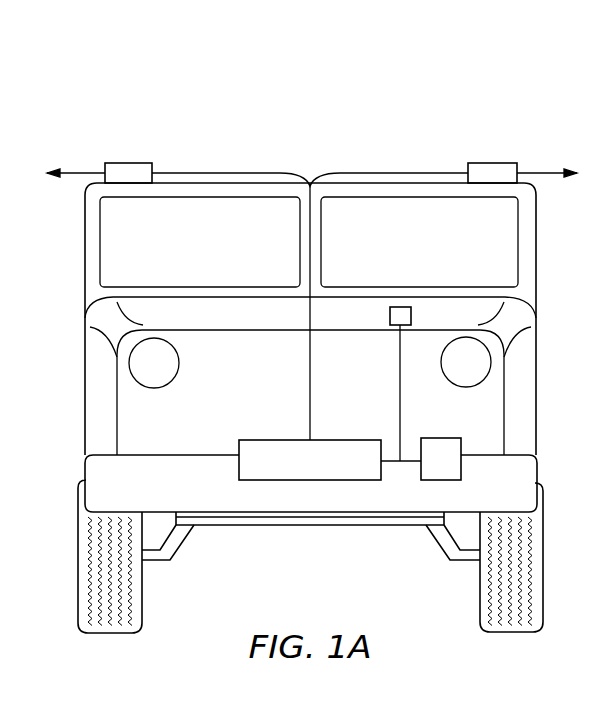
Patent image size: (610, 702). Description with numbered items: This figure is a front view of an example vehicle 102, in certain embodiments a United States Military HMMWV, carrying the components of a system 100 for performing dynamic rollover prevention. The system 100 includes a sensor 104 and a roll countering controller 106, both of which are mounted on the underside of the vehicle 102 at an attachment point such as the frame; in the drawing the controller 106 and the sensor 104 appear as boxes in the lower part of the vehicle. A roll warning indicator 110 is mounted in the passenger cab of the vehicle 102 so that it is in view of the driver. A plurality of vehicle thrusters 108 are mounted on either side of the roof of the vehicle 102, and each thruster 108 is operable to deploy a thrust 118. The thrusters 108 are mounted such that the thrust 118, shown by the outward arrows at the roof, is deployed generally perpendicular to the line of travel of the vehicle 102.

The system for performing dynamic rollover prevention 100 is at (250, 83).
The vehicle 102 is at (537, 296).
The sensor 104 is at (461, 468).
The roll countering controller 106 is at (275, 440).
The vehicle thruster 108 is at (127, 163).
The roll warning indicator 110 is at (412, 312).
The thrust 118 is at (77, 172).